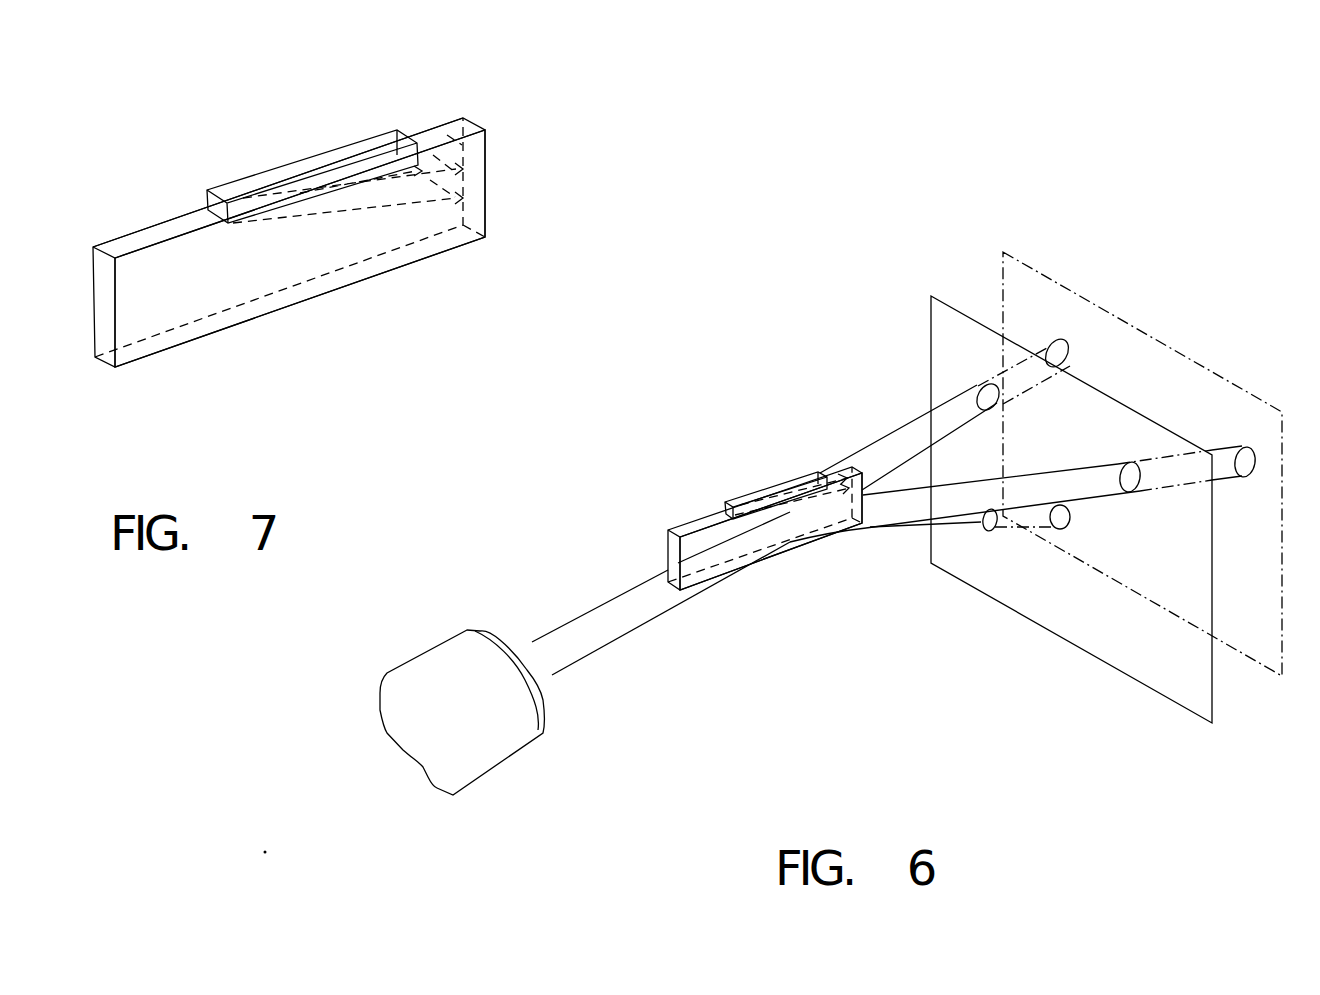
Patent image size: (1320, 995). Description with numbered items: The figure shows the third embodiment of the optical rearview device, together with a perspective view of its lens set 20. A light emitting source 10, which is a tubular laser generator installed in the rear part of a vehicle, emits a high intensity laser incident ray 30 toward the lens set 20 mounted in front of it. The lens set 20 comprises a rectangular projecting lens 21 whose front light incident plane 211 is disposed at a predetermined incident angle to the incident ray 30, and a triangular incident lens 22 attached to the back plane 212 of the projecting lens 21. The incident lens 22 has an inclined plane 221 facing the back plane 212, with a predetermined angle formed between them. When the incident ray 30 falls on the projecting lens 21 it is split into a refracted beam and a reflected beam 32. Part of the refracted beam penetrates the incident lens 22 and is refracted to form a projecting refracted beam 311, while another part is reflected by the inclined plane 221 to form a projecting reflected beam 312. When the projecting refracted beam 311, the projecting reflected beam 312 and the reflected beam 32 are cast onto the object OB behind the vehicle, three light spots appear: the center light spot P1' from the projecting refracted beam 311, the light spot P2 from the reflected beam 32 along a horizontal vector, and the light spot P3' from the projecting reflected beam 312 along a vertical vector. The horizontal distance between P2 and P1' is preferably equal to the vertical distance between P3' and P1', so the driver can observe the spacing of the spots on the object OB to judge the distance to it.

In FIG. 6, the light emitting source 10 is at (498, 748).
In FIG. 7, the lens set 20 is at (445, 298).
In FIG. 6, the lens set 20 is at (636, 547).
In FIG. 7, the projecting lens 21 is at (487, 158).
In FIG. 6, the projecting lens 21 is at (698, 520).
In FIG. 7, the incident lens 22 is at (283, 166).
In FIG. 6, the incident lens 22 is at (747, 495).
In FIG. 6, the incident ray 30 is at (605, 632).
In FIG. 6, the reflected beam 32 is at (882, 530).
In FIG. 7, the front light incident plane 211 is at (290, 296).
In FIG. 6, the front light incident plane 211 is at (757, 553).
In FIG. 7, the back plane 212 is at (158, 221).
In FIG. 7, the inclined plane 221 is at (347, 193).
In FIG. 6, the inclined plane 221 is at (725, 502).
In FIG. 6, the projecting refracted beam 311 is at (887, 448).
In FIG. 6, the projecting reflected beam 312 is at (960, 532).
In FIG. 6, the center light spot P1' is at (964, 374).
In FIG. 6, the light spot P2 is at (1143, 498).
In FIG. 6, the light spot P3' is at (1028, 561).
In FIG. 6, the object OB is at (1158, 690).